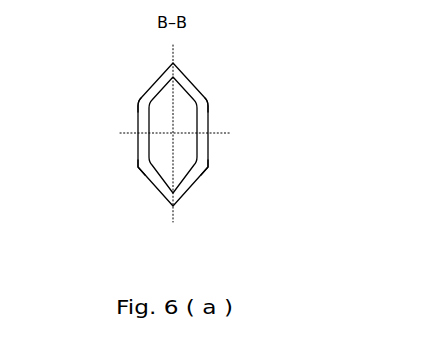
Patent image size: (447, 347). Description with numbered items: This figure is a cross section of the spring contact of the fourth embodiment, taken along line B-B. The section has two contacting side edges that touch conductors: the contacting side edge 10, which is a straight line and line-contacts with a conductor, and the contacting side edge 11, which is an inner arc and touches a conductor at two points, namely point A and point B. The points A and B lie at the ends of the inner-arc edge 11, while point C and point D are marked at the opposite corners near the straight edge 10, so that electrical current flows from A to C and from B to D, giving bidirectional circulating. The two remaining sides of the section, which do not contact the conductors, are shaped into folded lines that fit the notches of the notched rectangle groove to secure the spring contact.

The contacting side edge 10 is at (138, 120).
The contacting side edge 11 is at (206, 119).
The point A is at (208, 104).
The point B is at (208, 166).
The point C is at (139, 106).
The point D is at (139, 166).